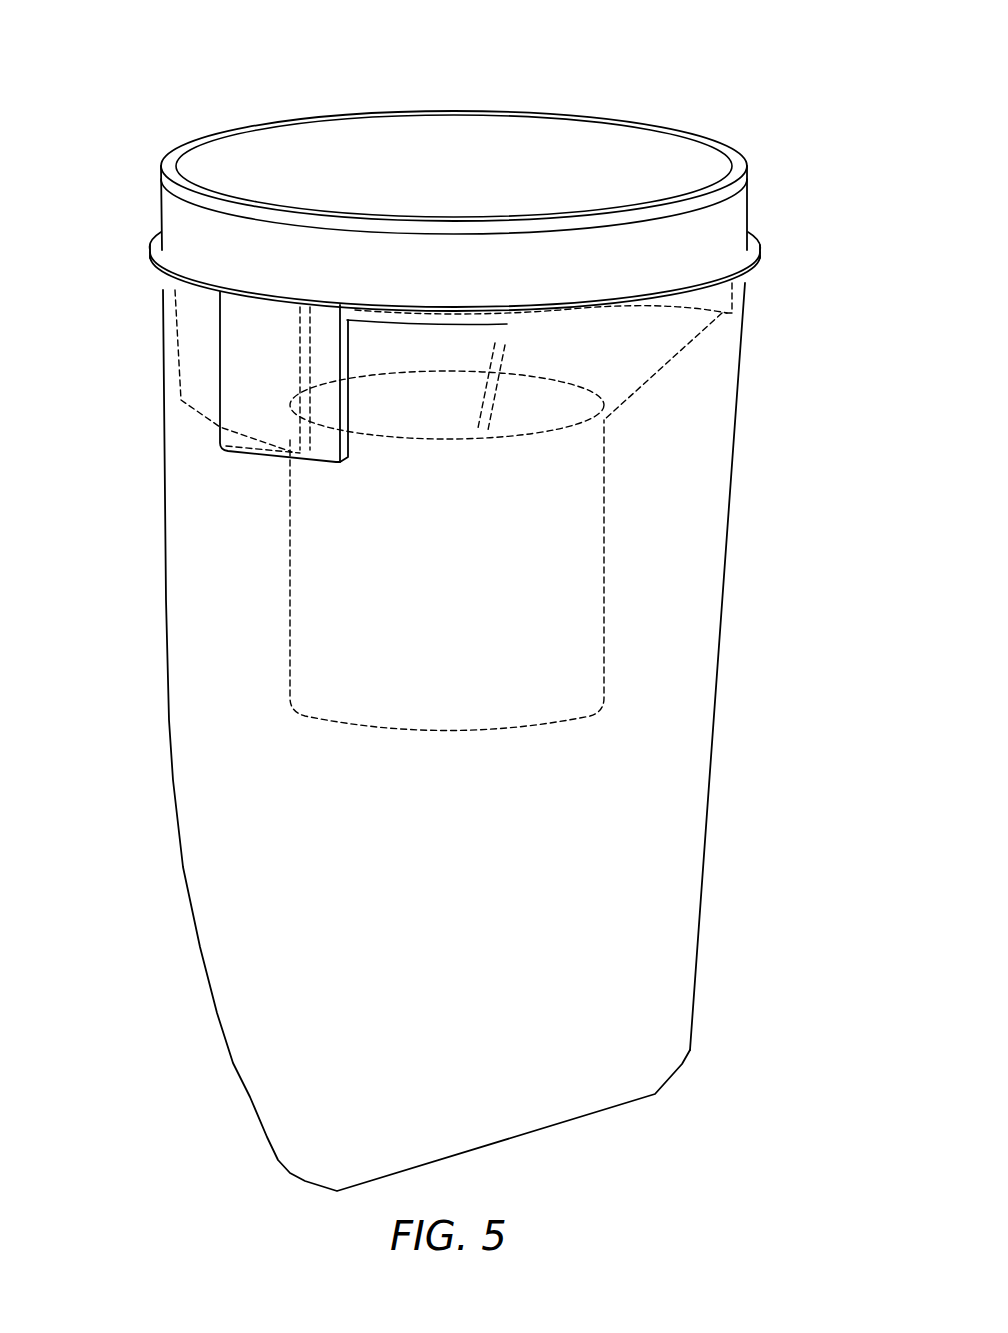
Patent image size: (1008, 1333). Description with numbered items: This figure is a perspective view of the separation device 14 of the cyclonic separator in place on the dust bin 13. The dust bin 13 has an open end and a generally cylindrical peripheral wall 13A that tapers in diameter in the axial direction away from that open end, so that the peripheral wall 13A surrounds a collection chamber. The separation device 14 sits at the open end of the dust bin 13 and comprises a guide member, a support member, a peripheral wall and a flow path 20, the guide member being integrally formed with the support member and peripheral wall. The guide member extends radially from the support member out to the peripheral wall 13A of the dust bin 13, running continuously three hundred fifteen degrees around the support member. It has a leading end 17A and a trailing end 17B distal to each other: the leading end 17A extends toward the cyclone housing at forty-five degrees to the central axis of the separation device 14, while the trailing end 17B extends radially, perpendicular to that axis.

The dust bin 13 is at (730, 503).
The peripheral wall 13A is at (738, 390).
The separation device 14 is at (203, 417).
The leading end 17A is at (507, 343).
The trailing end 17B is at (333, 443).
The flow path 20 is at (445, 423).